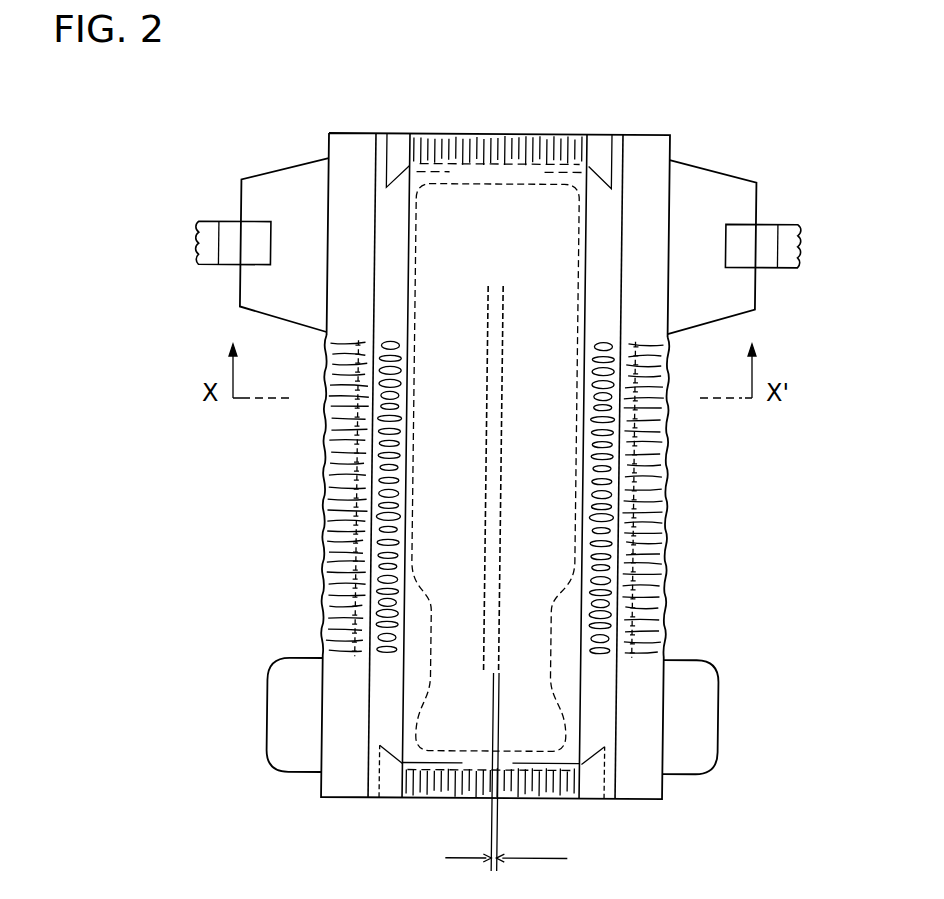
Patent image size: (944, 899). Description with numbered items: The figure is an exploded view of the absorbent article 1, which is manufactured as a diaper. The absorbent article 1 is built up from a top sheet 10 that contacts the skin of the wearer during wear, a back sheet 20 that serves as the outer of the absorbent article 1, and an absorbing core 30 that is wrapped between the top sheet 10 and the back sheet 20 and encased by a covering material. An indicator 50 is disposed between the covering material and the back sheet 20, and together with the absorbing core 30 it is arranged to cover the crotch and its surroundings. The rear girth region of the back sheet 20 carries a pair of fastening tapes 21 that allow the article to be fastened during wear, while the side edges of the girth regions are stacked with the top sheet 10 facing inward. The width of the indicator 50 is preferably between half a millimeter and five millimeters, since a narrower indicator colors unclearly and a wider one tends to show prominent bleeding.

The absorbent article 1 is at (259, 93).
The top sheet 10 is at (541, 215).
The back sheet 20 is at (673, 146).
The fastening tape 21 is at (770, 250).
The absorbing core 30 is at (473, 183).
The indicator 50 is at (501, 502).